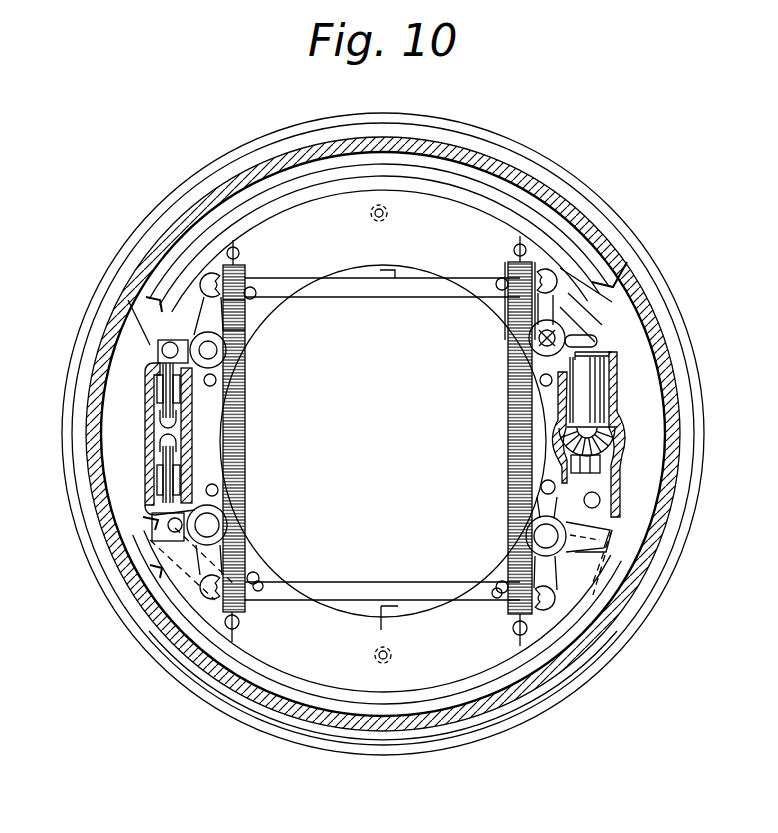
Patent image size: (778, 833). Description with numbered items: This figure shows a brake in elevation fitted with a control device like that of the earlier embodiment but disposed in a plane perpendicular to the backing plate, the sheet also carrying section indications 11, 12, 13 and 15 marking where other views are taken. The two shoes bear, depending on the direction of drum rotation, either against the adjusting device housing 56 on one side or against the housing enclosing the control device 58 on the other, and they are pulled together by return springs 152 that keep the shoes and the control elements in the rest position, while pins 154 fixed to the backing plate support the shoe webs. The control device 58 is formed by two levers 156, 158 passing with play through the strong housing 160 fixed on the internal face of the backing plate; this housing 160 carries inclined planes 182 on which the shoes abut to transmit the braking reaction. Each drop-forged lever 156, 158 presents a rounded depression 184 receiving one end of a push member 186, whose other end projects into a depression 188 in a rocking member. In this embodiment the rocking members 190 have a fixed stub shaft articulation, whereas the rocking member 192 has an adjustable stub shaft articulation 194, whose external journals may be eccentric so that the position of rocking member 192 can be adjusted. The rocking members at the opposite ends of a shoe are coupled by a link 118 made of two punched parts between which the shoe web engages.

The section line 11- 11 is at (190, 157).
The section line 12- 12 is at (542, 634).
The section line 13- 13 is at (549, 257).
The section line 15- 15 is at (383, 82).
The adjusting device housing 56 is at (634, 416).
The control device 58 is at (243, 422).
The link 118 is at (421, 288).
The return springs 152 is at (245, 480).
The pins 154 is at (390, 213).
The lever 156 is at (155, 420).
The lever 158 is at (155, 462).
The housing 160 is at (205, 408).
The inclined planes 182 is at (153, 348).
The rounded depression 184 is at (157, 388).
The push member 186 is at (150, 487).
The depression 188 is at (140, 555).
The rocking members 190 is at (250, 326).
The rocking member 192 is at (565, 302).
The adjustable stub shaft articulation 194 is at (510, 360).